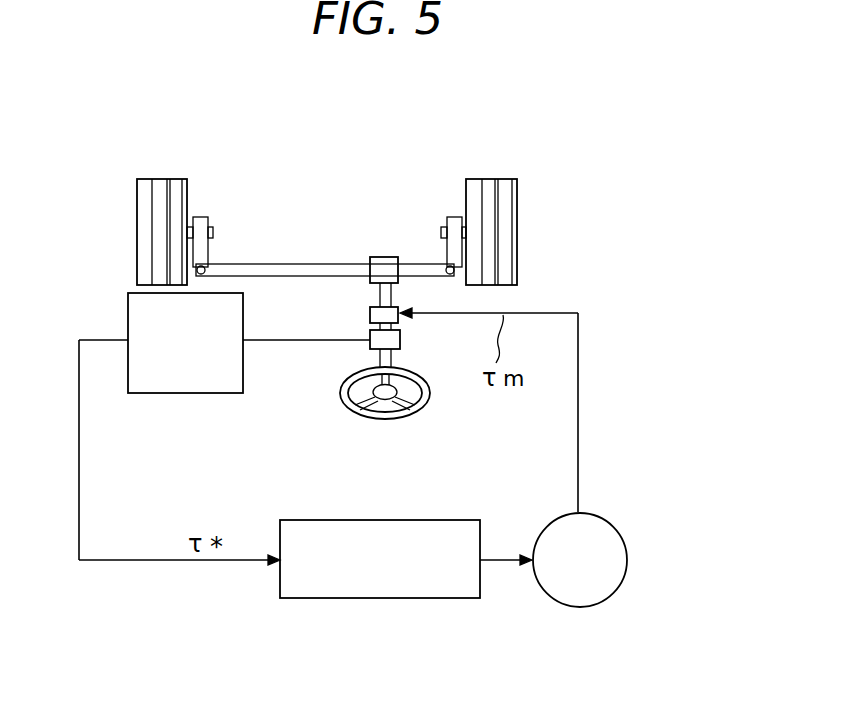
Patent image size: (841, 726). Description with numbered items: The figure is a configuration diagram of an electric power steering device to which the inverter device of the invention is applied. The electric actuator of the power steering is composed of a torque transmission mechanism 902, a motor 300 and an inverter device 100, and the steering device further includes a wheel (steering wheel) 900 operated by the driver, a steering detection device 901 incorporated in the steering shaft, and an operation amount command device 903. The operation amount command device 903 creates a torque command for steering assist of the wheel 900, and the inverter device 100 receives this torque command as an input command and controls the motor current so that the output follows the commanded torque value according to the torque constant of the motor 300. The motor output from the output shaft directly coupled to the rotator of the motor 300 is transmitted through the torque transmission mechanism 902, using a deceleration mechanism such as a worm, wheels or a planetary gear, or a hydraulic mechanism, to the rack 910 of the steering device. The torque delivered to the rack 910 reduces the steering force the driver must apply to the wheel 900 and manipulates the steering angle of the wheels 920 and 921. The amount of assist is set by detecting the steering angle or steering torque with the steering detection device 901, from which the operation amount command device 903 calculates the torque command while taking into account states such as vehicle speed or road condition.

The wheel 920 is at (137, 232).
The wheel 921 is at (518, 231).
The rack 910 is at (295, 262).
The torque transmission mechanism 902 is at (370, 317).
The steering detection device 901 is at (365, 352).
The wheel (steering wheel) 900 is at (430, 398).
The operation amount command device 903 is at (194, 394).
The inverter device 100 is at (380, 518).
The motor 300 is at (628, 557).